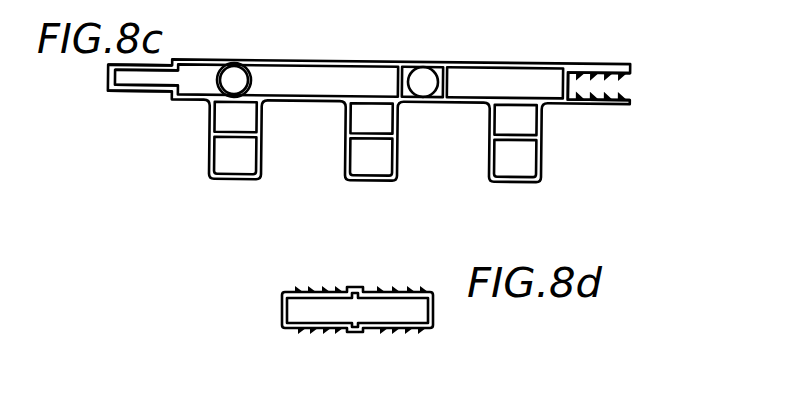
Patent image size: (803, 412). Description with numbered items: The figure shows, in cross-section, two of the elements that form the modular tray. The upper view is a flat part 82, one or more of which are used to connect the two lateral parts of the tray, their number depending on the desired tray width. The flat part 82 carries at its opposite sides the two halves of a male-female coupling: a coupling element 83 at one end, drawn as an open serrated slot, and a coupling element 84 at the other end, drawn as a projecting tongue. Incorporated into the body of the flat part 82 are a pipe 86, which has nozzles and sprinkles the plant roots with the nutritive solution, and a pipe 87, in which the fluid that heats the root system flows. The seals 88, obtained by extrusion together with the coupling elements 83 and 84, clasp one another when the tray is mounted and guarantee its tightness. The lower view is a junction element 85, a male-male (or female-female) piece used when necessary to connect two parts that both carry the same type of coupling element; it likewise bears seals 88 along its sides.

In FIG. 8C, the flat part 82 is at (310, 59).
In FIG. 8C, the coupling element 83 is at (627, 87).
In FIG. 8C, the coupling element 84 is at (143, 92).
In FIG. 8D, the junction element 85 is at (362, 335).
In FIG. 8C, the pipe 86 is at (247, 88).
In FIG. 8C, the pipe 87 is at (423, 82).
In FIG. 8C, the seal 88 is at (593, 72).
In FIG. 8D, the seal 88 is at (325, 290).